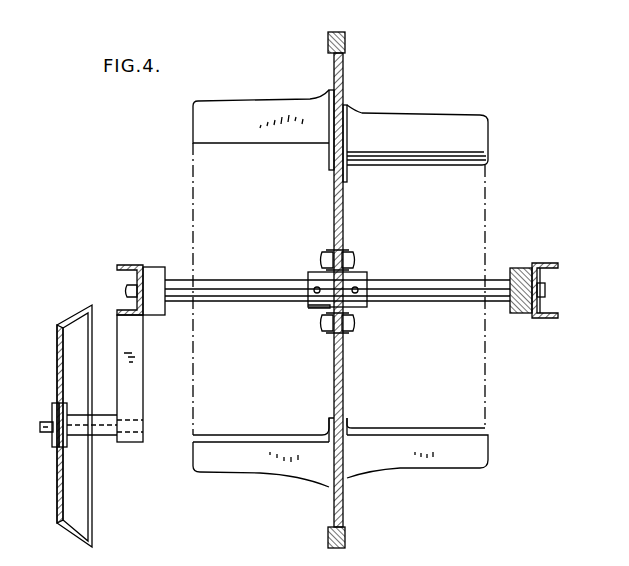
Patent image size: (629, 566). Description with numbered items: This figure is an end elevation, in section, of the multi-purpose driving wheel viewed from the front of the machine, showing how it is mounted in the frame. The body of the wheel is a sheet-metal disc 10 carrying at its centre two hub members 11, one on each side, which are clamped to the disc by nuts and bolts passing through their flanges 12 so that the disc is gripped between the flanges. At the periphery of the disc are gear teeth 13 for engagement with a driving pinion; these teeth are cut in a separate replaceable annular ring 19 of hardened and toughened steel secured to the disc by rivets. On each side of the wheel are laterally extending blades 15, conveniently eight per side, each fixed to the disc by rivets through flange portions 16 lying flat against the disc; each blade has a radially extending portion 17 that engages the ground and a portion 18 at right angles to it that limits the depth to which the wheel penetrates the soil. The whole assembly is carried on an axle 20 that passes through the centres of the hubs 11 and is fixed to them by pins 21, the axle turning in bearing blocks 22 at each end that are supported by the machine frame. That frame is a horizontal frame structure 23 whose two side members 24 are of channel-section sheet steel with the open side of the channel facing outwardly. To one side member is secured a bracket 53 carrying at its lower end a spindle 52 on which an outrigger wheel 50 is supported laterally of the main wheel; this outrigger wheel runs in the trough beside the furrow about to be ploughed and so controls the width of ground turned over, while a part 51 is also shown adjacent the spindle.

The disc 10 is at (334, 203).
The hub members 11 is at (308, 306).
The flanges 12 is at (347, 253).
The gear teeth 13 is at (333, 32).
The blades 15 is at (218, 438).
The flange portions 16 is at (347, 424).
The radially extending portion 17 is at (240, 470).
The depth-limiting portion 18 is at (290, 432).
The annular ring 19 is at (345, 46).
The axle 20 is at (430, 298).
The pins 21 is at (317, 286).
The bearing blocks 22 is at (155, 268).
The horizontal frame structure 23 is at (555, 263).
The side members 24 is at (128, 265).
The outrigger wheel 50 is at (57, 476).
The washer plate 51 is at (40, 432).
The spindle 52 is at (105, 436).
The bracket 53 is at (147, 378).